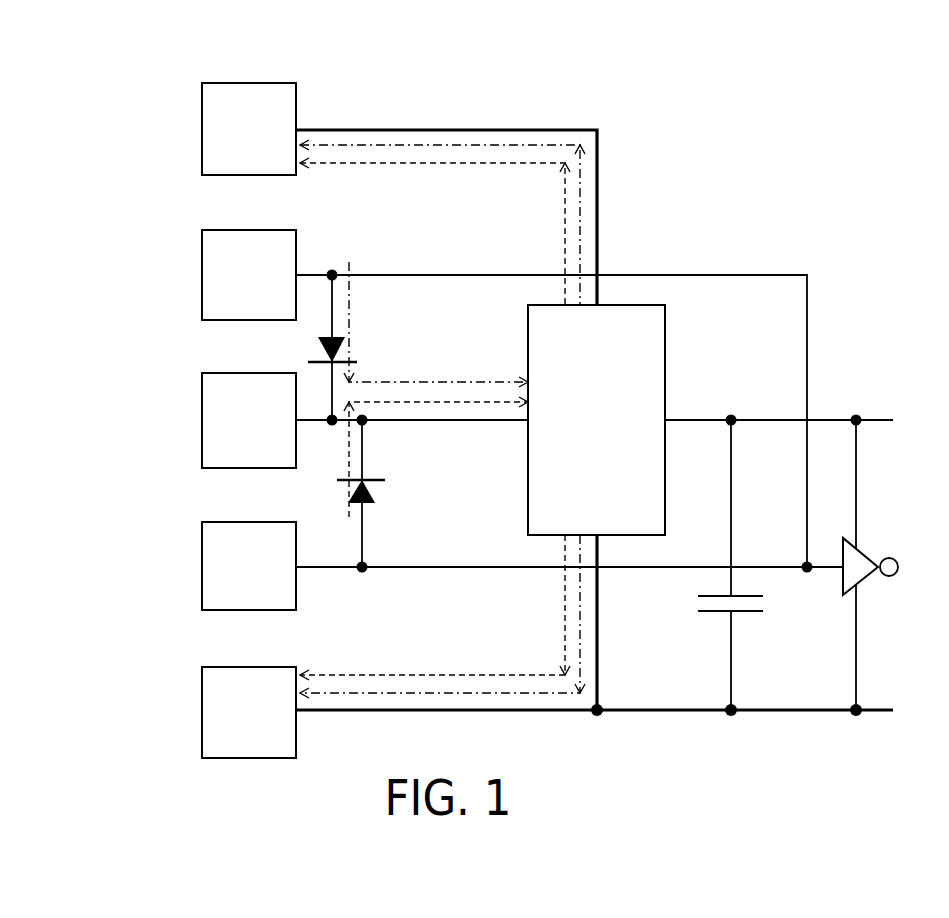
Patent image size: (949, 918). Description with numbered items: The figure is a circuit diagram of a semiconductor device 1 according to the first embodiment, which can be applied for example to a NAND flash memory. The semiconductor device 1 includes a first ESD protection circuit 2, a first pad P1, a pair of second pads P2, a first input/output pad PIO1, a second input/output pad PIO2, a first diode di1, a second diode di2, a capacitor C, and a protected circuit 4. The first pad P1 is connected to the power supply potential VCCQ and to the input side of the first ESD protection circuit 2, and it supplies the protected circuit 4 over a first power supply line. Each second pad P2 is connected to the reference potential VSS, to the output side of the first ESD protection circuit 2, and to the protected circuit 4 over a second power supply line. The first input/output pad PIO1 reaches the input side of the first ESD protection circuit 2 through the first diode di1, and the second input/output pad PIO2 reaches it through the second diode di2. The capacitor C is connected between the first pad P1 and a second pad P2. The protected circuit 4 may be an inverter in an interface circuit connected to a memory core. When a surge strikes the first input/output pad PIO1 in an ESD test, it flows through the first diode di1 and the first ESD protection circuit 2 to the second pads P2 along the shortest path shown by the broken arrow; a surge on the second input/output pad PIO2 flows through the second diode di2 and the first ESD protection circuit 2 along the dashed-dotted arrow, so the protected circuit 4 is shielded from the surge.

The semiconductor device 1 is at (105, 88).
The first ESD protection circuit 2 is at (528, 496).
The protected circuit 4 is at (871, 553).
The first diode di1 is at (378, 498).
The second diode di2 is at (341, 356).
The capacitor C is at (735, 622).
The first pad P1 is at (202, 426).
The second pad P2 is at (202, 132).
The first input/output pad PIO1 is at (202, 567).
The second input/output pad PIO2 is at (202, 280).